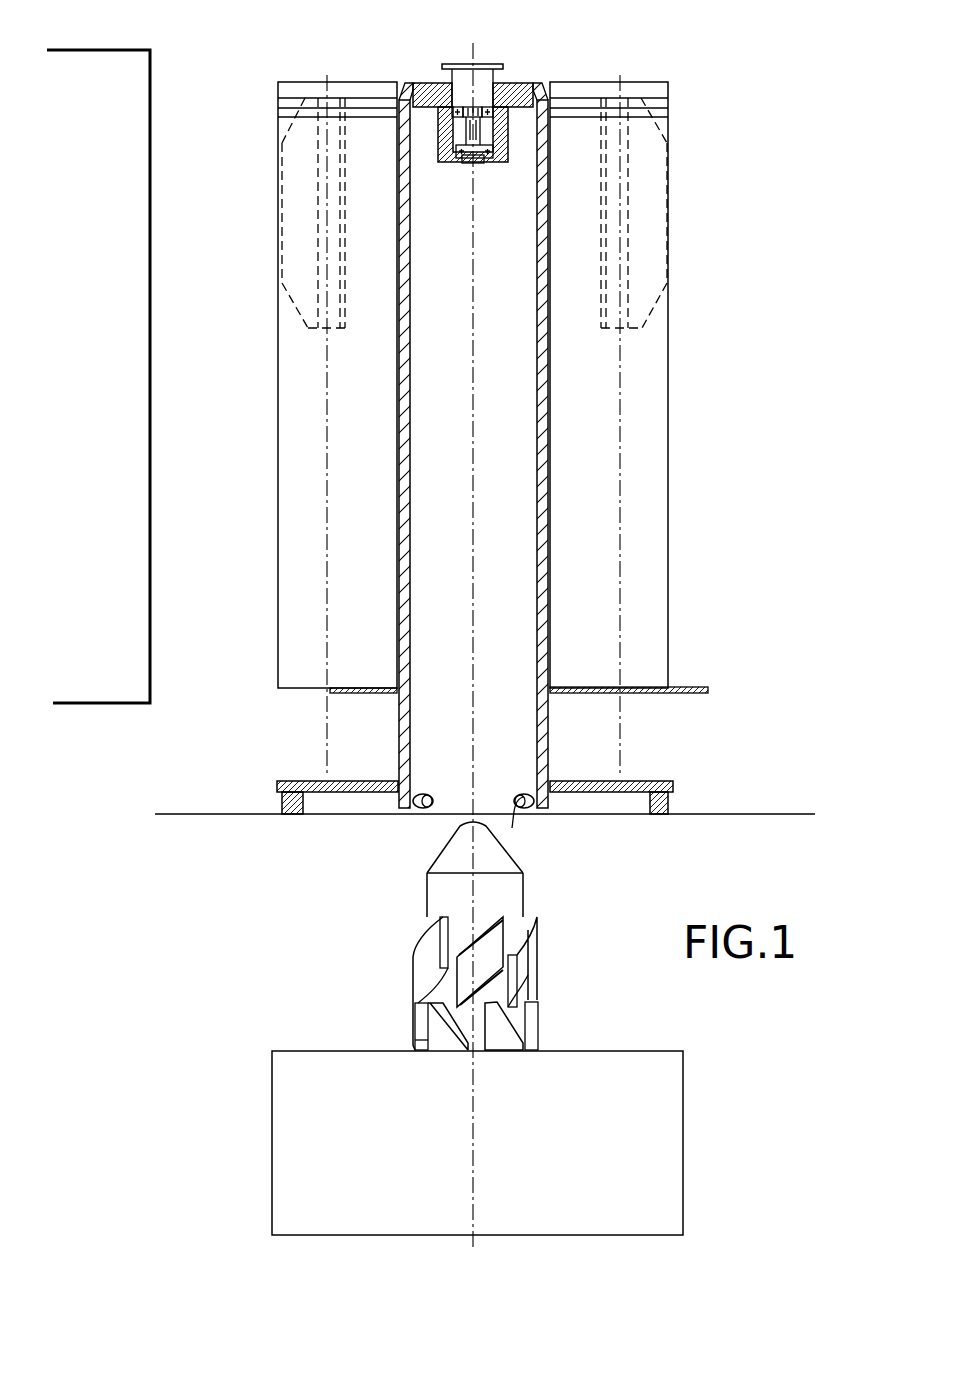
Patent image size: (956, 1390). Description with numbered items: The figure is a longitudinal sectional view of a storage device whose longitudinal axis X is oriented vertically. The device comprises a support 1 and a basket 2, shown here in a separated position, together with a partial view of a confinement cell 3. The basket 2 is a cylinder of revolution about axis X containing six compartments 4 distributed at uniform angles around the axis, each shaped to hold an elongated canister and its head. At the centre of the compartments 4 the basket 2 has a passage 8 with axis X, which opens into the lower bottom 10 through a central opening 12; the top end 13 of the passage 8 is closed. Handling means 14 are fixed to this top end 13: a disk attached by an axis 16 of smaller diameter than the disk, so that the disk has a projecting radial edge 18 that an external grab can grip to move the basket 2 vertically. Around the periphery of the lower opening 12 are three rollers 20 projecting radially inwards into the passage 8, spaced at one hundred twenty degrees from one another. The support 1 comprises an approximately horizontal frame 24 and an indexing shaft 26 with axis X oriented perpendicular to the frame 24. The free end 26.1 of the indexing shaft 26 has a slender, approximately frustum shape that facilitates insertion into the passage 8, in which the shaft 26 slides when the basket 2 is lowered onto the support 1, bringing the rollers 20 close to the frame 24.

The support 1 is at (713, 1102).
The basket 2 is at (700, 480).
The confinement cell 3 is at (114, 551).
The compartments 4 is at (302, 422).
The passage 8 is at (541, 585).
The lower bottom 10 is at (550, 803).
The central opening 12 is at (412, 808).
The top end 13 is at (530, 120).
The handling means 14 is at (439, 66).
The axis 16 is at (493, 78).
The projecting radial edge 18 is at (493, 66).
The rollers 20 is at (435, 800).
The frame 24 is at (293, 1089).
The indexing shaft 26 is at (388, 934).
The free end 26.1 is at (460, 847).